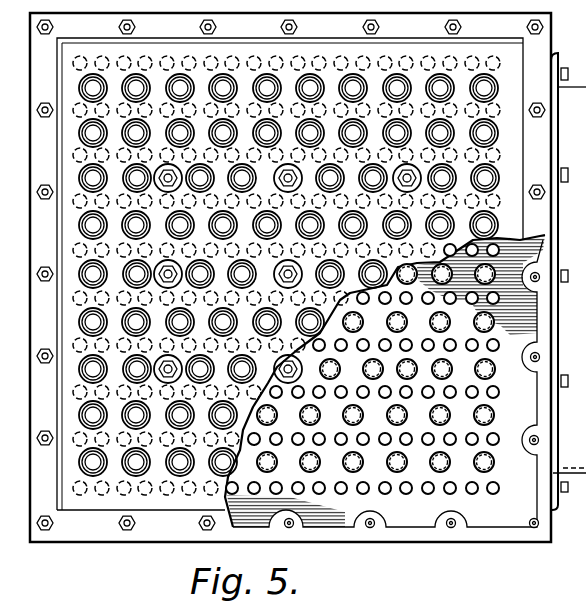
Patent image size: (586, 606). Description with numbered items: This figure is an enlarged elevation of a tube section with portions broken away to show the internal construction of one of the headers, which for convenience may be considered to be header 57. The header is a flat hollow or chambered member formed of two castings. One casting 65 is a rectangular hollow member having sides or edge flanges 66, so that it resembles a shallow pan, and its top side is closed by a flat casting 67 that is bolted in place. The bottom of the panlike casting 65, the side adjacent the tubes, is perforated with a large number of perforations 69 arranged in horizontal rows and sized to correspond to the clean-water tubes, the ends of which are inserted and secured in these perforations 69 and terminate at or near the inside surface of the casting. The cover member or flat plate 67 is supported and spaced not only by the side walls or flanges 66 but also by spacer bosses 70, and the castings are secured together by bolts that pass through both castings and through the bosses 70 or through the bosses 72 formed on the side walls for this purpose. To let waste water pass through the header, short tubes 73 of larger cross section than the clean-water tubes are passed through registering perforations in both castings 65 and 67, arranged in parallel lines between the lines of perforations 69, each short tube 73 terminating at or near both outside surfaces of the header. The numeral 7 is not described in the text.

The casing 7 is at (572, 94).
The header 57 is at (524, 352).
The panlike casting 65 is at (540, 477).
The edge flanges 66 is at (426, 530).
The flat casting 67 is at (532, 146).
The perforations 69 is at (514, 474).
The spacer bosses 70 is at (410, 358).
The bosses 72 is at (520, 426).
The short tubes 73 is at (352, 474).